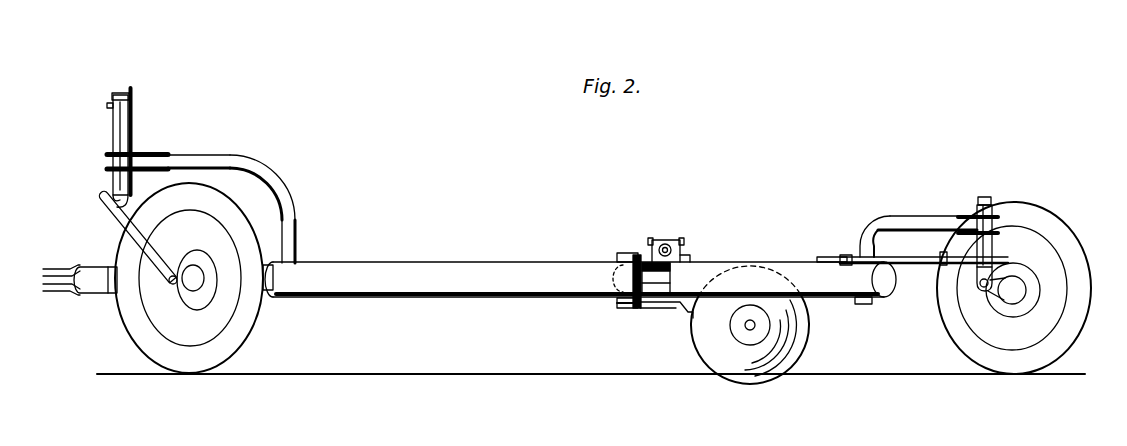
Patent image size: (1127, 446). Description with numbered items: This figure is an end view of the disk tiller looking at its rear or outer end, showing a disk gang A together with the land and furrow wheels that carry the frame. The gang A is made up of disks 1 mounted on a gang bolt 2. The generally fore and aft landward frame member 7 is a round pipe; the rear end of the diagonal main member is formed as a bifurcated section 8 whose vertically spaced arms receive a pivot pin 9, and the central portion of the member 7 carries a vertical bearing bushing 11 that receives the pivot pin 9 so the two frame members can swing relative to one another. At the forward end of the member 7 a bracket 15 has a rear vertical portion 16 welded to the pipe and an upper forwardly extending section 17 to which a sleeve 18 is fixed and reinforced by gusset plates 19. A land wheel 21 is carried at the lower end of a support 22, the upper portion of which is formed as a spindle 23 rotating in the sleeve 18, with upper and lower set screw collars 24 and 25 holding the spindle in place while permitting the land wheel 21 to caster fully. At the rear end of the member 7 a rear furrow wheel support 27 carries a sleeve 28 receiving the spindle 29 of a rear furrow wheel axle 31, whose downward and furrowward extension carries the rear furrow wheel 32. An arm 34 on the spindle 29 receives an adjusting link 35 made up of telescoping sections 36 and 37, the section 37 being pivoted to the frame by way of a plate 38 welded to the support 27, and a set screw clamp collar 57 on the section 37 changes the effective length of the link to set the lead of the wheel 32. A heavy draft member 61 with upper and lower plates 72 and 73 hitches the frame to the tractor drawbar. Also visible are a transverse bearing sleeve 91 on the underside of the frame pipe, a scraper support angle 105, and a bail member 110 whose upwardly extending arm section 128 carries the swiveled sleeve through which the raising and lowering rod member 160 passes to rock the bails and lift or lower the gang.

The disk 1 is at (806, 355).
The gang bolt 2 is at (745, 326).
The fore and aft tubular member 7 is at (462, 272).
The bifurcated section 8 is at (615, 257).
The pivot pin 9 is at (635, 254).
The vertical bearing bushing 11 is at (660, 277).
The bracket 15 is at (234, 151).
The rear vertical portion 16 is at (298, 227).
The forwardly extending section 17 is at (183, 158).
The sleeve 18 is at (120, 128).
The gusset plates 19 is at (150, 162).
The land wheel 21 is at (250, 325).
The support 22 is at (125, 222).
The spindle 23 is at (130, 95).
The upper set screw collar 24 is at (135, 100).
The lower set screw collar 25 is at (112, 186).
The rear furrow wheel support 27 is at (907, 216).
The sleeve 28 is at (994, 247).
The spindle 29 is at (986, 197).
The rear furrow wheel axle 31 is at (968, 299).
The rear furrow wheel 32 is at (1058, 335).
The arm 34 is at (968, 262).
The adjusting link 35 is at (925, 274).
The link section 36 is at (943, 264).
The link section 37 is at (924, 270).
The plate 38 is at (826, 257).
The adjusting set screw clamp collar 57 is at (948, 244).
The draft member 61 is at (113, 295).
The upper plate 72 is at (65, 269).
The lower plate 73 is at (68, 291).
The transverse bearing sleeve 91 is at (632, 310).
The scraper support angle 105 is at (783, 258).
The bail member 110 is at (667, 310).
The upwardly extending arm section 128 is at (686, 258).
The raising and lowering rod member 160 is at (671, 234).
The disk gang A is at (772, 397).